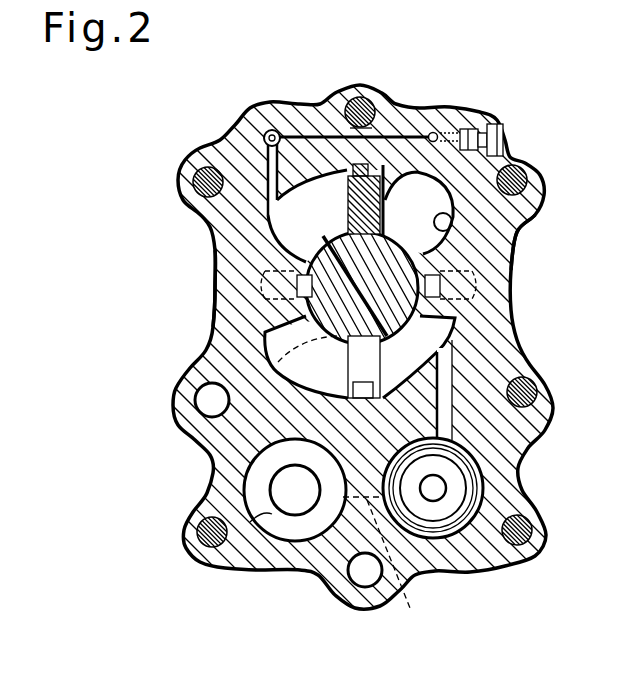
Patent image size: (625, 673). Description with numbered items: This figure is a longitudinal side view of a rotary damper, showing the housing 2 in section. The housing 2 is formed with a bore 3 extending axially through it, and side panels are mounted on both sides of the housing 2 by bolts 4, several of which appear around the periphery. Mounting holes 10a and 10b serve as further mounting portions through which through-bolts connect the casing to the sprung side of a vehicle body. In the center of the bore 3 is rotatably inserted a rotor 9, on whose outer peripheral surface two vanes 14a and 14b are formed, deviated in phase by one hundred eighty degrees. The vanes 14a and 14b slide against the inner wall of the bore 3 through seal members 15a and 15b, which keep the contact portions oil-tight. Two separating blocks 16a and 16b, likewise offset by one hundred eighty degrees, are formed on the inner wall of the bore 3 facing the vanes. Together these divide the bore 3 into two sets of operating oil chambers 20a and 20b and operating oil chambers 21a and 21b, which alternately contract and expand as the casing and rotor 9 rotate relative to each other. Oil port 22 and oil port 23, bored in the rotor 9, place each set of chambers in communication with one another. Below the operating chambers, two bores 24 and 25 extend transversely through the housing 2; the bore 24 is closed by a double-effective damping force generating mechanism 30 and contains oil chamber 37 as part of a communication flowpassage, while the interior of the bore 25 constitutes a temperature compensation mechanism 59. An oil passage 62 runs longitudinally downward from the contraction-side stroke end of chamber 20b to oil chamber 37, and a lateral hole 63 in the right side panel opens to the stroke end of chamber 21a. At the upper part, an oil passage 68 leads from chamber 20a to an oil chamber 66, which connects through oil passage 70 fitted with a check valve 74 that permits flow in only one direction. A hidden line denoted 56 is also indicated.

The housing 2 is at (222, 443).
The bore 3 is at (235, 238).
The bolts 4 is at (370, 102).
The rotor 9 is at (442, 342).
The mounting hole 10a is at (349, 572).
The mounting hole 10b is at (197, 398).
The vane 14a is at (405, 219).
The vane 14b is at (356, 343).
The seal member 15a is at (455, 282).
The seal member 15b is at (295, 283).
The separating block 16a is at (300, 295).
The separating block 16b is at (438, 296).
The operating oil chamber 20a is at (212, 215).
The operating oil chamber 20b is at (508, 343).
The operating oil chamber 21a is at (393, 172).
The operating oil chamber 21b is at (265, 330).
The oil port 22 is at (337, 242).
The oil port 23 is at (283, 347).
The bore 24 is at (431, 537).
The bore 25 is at (281, 542).
The double-effective damping force generating mechanism 30 is at (458, 533).
The oil chamber 37 is at (485, 478).
The passage 56 is at (385, 569).
The temperature compensation mechanism 59 is at (255, 548).
The oil passage 62 is at (455, 430).
The lateral hole 63 is at (517, 227).
The oil chamber 66 is at (265, 131).
The oil passage 68 is at (247, 122).
The oil passage 70 is at (276, 131).
The check valve 74 is at (448, 124).